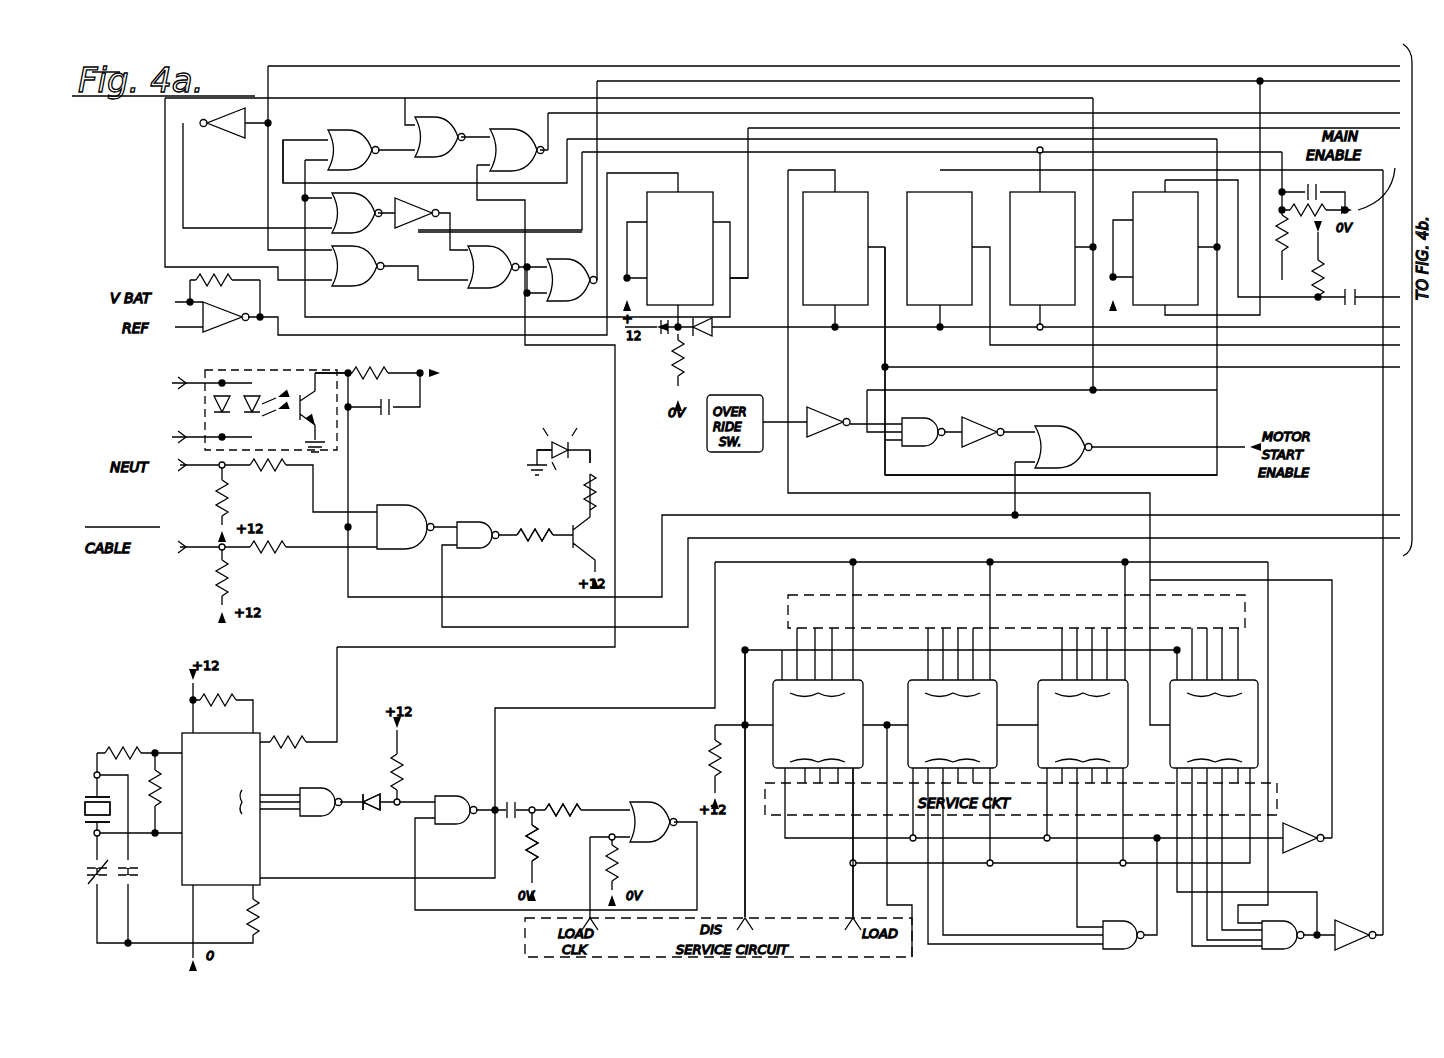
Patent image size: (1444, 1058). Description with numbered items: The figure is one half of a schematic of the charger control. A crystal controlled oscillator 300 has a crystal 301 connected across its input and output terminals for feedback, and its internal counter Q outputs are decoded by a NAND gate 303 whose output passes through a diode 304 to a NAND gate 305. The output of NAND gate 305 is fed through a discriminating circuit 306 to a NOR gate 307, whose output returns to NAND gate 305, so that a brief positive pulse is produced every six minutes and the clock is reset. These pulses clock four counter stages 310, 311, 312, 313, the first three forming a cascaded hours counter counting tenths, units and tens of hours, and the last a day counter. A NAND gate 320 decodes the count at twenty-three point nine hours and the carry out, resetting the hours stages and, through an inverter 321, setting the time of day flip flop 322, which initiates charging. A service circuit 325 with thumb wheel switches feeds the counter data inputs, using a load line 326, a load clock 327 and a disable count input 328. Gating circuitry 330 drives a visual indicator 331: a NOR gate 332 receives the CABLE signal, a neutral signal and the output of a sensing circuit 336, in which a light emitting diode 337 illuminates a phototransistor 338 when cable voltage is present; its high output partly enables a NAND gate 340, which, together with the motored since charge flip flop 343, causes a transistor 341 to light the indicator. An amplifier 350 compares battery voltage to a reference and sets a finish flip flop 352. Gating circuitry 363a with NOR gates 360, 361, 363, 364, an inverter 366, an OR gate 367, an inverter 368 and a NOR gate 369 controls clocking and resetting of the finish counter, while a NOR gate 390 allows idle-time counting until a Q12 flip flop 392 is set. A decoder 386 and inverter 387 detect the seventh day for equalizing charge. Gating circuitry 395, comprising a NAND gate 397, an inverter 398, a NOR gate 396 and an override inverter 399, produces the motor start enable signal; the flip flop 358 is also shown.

The crystal controlled oscillator 300 is at (262, 860).
The crystal 301 is at (80, 788).
The NAND gate 303 is at (312, 816).
The diode 304 is at (370, 812).
The NAND gate 305 is at (466, 796).
The discriminating circuit 306 is at (545, 806).
The NOR gate 307 is at (658, 802).
The counter stage 310 is at (773, 695).
The counter stage 311 is at (997, 690).
The counter stage 312 is at (1038, 716).
The counter stage 313 is at (1258, 696).
The NAND gate 320 is at (1128, 912).
The inverter 321 is at (1296, 826).
The time of day flip flop 322 is at (856, 192).
The service circuit 325 is at (788, 596).
The load line 326 is at (853, 893).
The load clock 327 is at (590, 880).
The disable count input 328 is at (745, 893).
The gating circuitry 330 is at (478, 507).
The visual indicator 331 is at (562, 440).
The NOR gate 332 is at (424, 495).
The sensing circuit 336 is at (272, 371).
The light emitting diode 337 is at (300, 372).
The phototransistor 338 is at (316, 373).
The NAND gate 340 is at (462, 548).
The transistor 341 is at (560, 556).
The motored since charge flip flop 343 is at (1016, 190).
The amplifier 350 is at (210, 333).
The finish flip flop 352 is at (698, 192).
The TOW flip-flop 358 is at (922, 192).
The NOR gate 360 is at (455, 110).
The NOR gate 361 is at (358, 286).
The NOR gate 363 is at (522, 118).
The feedback line 363a is at (355, 170).
The NOR gate 364 is at (575, 260).
The inverter 366 is at (222, 138).
The OR gate 367 is at (362, 233).
The inverter 368 is at (418, 208).
The NOR gate 369 is at (484, 290).
The decoder 386 is at (1300, 921).
The inverter 387 is at (1350, 924).
The NOR gate 390 is at (365, 133).
The Q12 flip flop 392 is at (1150, 190).
The gating circuitry 395 is at (930, 468).
The NOR gate 396 is at (1072, 414).
The NAND gate 397 is at (922, 412).
The inverter 398 is at (980, 420).
The inverter 399 is at (822, 437).